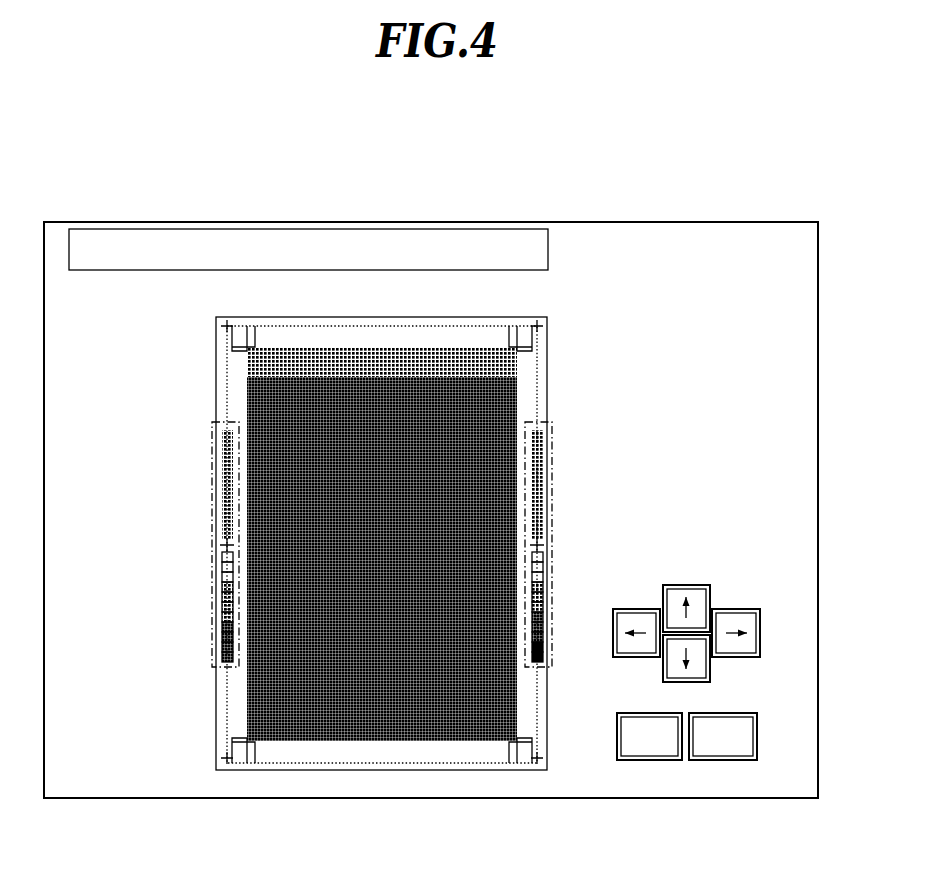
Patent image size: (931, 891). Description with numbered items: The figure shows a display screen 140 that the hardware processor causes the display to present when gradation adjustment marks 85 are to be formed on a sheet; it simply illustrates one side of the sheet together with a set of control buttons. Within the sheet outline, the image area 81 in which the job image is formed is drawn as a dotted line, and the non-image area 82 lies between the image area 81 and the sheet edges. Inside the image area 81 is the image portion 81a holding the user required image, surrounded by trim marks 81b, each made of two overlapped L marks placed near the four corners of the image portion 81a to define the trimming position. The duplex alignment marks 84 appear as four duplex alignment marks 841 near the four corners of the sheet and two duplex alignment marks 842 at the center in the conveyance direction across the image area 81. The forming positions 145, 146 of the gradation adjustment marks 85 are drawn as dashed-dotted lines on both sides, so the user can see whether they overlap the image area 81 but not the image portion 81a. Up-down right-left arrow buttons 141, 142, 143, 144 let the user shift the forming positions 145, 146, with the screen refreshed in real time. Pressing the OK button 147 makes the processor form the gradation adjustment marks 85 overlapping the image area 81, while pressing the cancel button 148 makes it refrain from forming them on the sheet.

The display screen 140 is at (625, 215).
The image area 81 is at (429, 325).
The non-image area 82 is at (471, 317).
The image portion 81a is at (493, 398).
The trim marks 81b is at (224, 344).
The duplex alignment marks 84 is at (382, 565).
The duplex alignment marks 841 is at (224, 325).
The duplex alignment marks 842 is at (222, 542).
The gradation adjustment marks 85 is at (219, 462).
The forming position 145 is at (213, 492).
The forming position 146 is at (553, 492).
The arrow button 141 is at (692, 585).
The arrow button 142 is at (708, 670).
The arrow button 143 is at (635, 609).
The arrow button 144 is at (743, 609).
The OK button 147 is at (663, 760).
The cancel button 148 is at (735, 760).